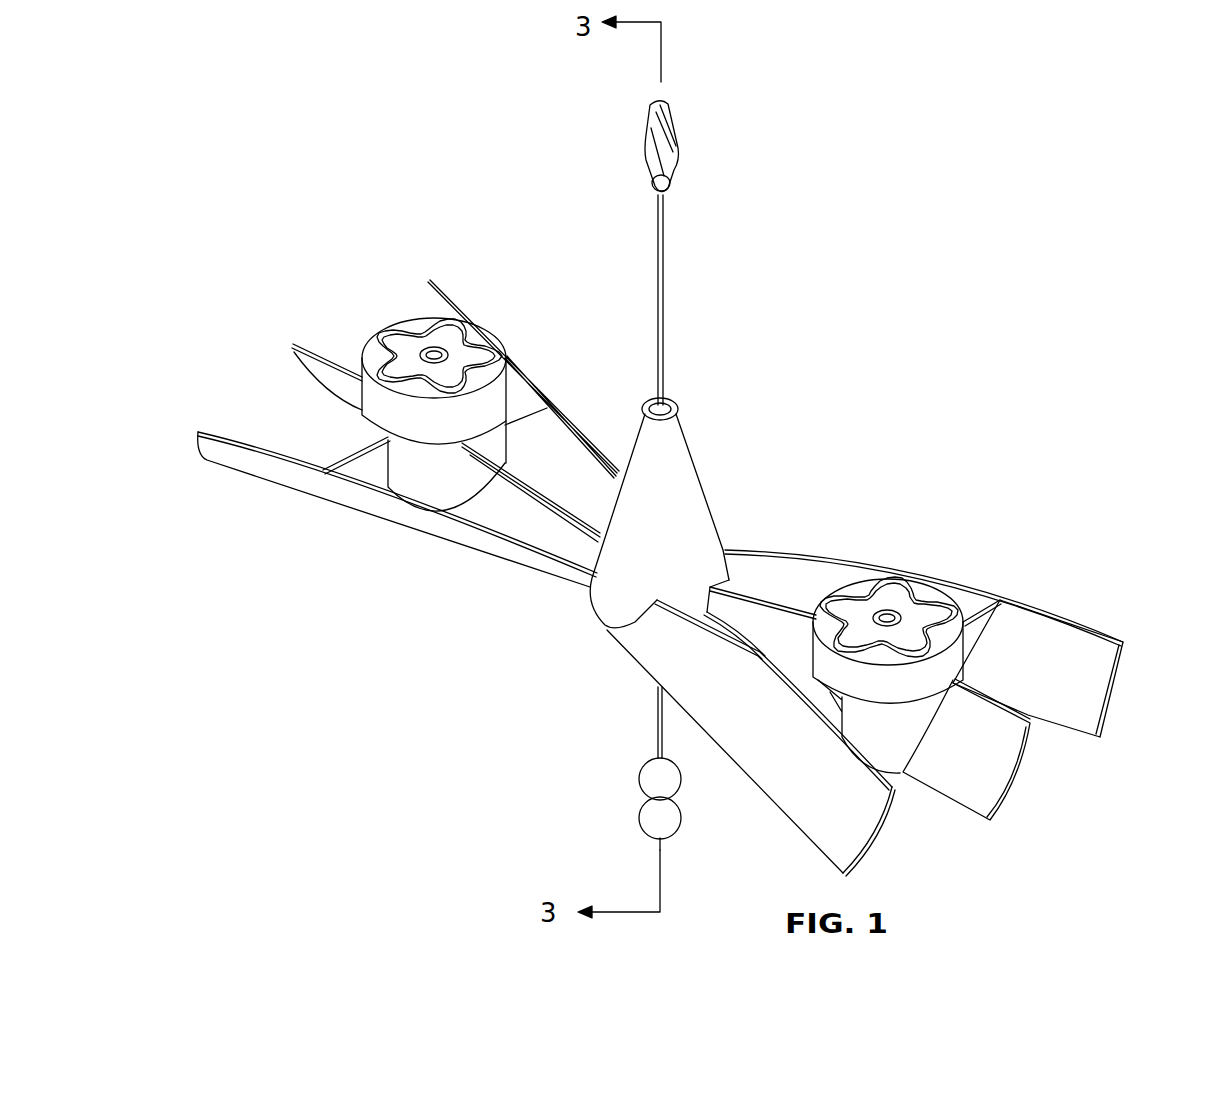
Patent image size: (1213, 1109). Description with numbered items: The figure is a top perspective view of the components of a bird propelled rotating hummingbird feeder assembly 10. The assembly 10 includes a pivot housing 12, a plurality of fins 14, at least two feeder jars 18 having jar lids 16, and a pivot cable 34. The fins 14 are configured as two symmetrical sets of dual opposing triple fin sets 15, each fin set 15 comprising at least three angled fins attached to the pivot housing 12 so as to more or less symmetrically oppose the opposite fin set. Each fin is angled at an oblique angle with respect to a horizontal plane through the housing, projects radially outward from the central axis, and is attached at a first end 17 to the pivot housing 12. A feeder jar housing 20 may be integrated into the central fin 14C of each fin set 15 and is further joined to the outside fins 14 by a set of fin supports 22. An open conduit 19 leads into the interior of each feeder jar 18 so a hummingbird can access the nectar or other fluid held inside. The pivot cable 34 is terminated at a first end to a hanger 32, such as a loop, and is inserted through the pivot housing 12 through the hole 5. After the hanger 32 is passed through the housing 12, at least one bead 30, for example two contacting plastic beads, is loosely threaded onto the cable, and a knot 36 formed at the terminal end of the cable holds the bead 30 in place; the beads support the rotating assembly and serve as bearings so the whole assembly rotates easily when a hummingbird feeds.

The bird propelled rotating hummingbird feeder assembly 10 is at (890, 249).
The pivot housing 12 is at (667, 526).
The fins 14 is at (563, 410).
The central fin 14C is at (313, 358).
The fin set 15 is at (262, 388).
The jar lid 16 is at (948, 603).
The first end 17 is at (724, 550).
The feeder jar 18 is at (920, 587).
The open conduit 19 is at (890, 610).
The feeder jar housing 20 is at (449, 484).
The fin supports 22 is at (358, 467).
The bead 30 is at (682, 817).
The hanger 32 is at (677, 126).
The pivot cable 34 is at (667, 268).
The knot 36 is at (663, 838).
The hole 5 is at (683, 392).